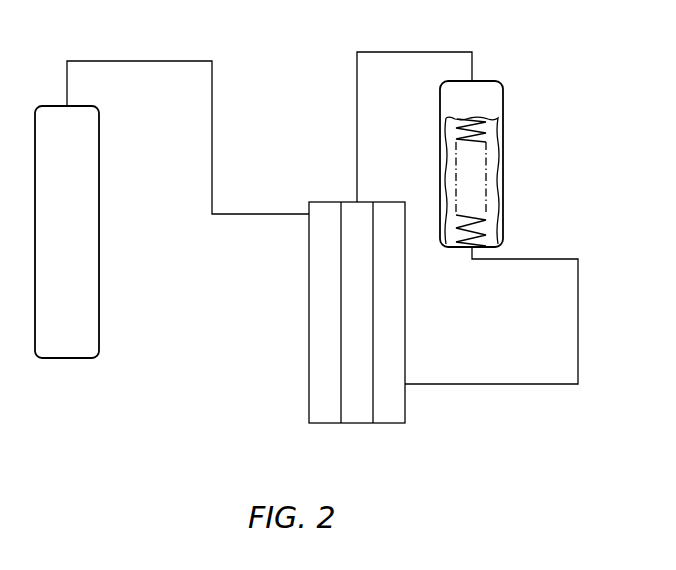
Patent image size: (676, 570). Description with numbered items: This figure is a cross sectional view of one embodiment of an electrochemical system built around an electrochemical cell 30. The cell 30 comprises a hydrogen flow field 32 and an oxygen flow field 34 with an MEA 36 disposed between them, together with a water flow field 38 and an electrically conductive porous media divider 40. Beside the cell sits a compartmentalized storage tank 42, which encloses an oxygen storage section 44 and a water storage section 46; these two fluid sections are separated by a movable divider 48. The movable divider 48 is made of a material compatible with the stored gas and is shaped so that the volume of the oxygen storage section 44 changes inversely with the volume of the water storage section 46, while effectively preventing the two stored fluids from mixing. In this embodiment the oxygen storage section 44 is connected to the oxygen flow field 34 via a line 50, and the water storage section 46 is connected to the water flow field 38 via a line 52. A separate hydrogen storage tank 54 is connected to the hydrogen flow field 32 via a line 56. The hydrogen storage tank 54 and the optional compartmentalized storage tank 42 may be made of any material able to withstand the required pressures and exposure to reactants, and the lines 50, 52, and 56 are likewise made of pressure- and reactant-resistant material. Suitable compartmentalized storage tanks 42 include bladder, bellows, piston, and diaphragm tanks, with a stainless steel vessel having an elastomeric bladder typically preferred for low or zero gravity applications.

The electrochemical cell 30 is at (407, 432).
The hydrogen flow field 32 is at (325, 292).
The oxygen flow field 34 is at (358, 268).
The MEA 36 is at (340, 336).
The water flow field 38 is at (388, 243).
The electrically conductive porous media divider 40 is at (375, 292).
The compartmentalized storage tank 42 is at (513, 81).
The oxygen storage section 44 is at (447, 100).
The water storage section 46 is at (447, 183).
The movable divider 48 is at (470, 133).
The line 50 is at (412, 52).
The line 52 is at (522, 260).
The hydrogen storage tank 54 is at (78, 303).
The line 56 is at (134, 61).